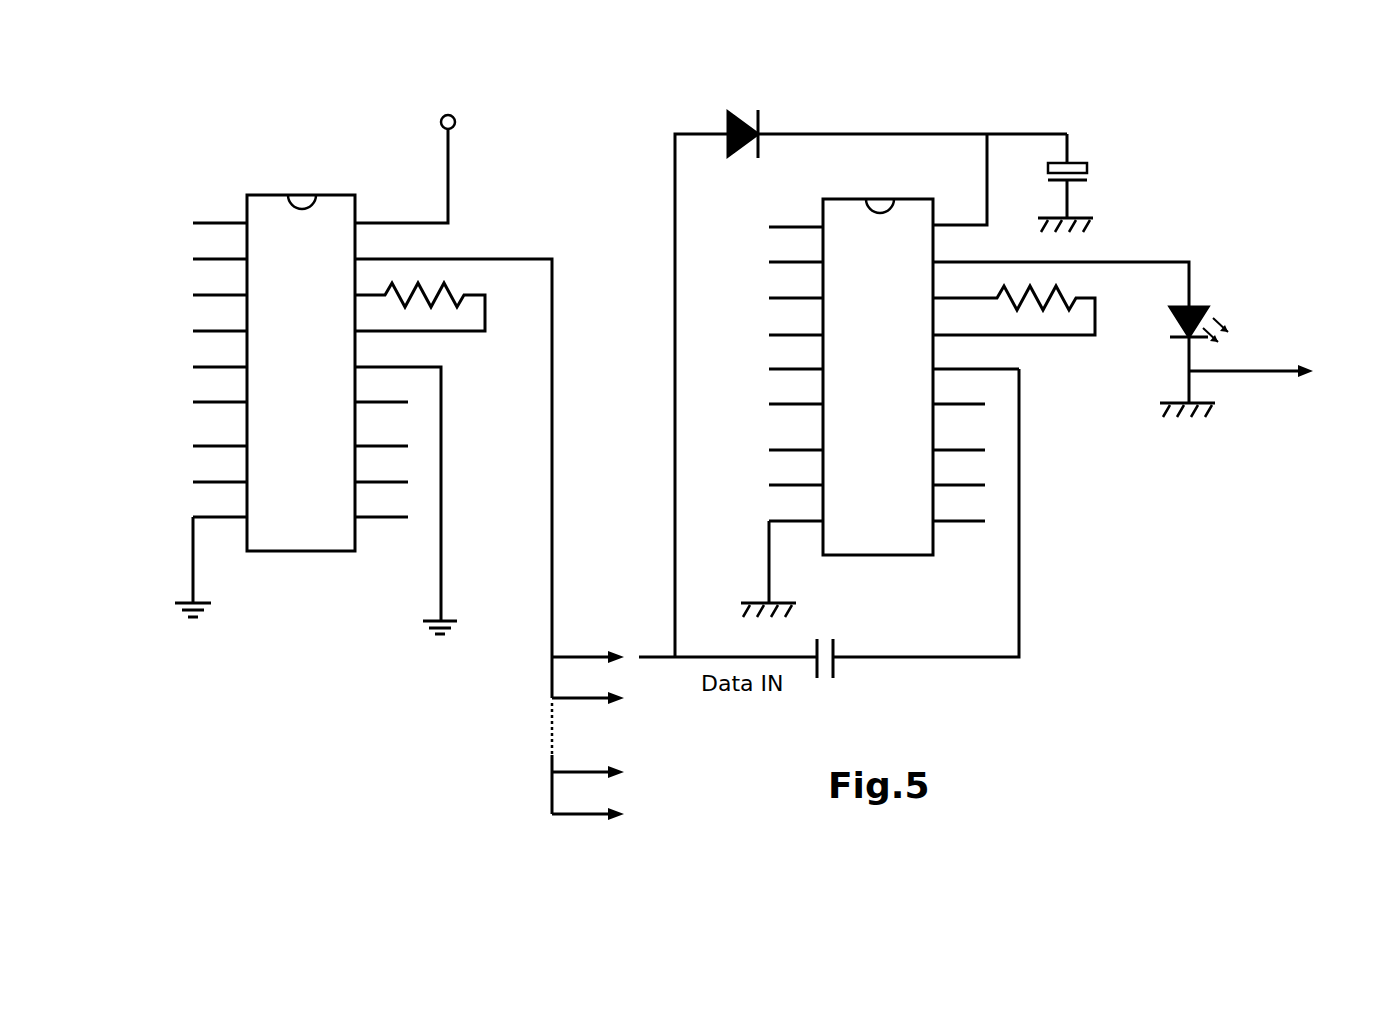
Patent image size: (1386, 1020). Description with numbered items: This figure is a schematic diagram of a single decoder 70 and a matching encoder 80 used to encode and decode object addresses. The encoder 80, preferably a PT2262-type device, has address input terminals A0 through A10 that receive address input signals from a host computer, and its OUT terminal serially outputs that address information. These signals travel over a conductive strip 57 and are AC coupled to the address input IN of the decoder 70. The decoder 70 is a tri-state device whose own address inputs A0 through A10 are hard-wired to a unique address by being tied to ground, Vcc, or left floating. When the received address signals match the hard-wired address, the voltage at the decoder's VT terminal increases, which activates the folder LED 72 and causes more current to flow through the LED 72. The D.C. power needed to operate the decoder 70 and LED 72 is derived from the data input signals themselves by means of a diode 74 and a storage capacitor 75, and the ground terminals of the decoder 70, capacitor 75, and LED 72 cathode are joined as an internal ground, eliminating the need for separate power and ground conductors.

The encoder 80 is at (301, 230).
The conductive strip 57 is at (555, 476).
The diode 74 is at (728, 118).
The decoder 70 is at (843, 207).
The storage capacitor 75 is at (1082, 165).
The LED 72 is at (1144, 360).